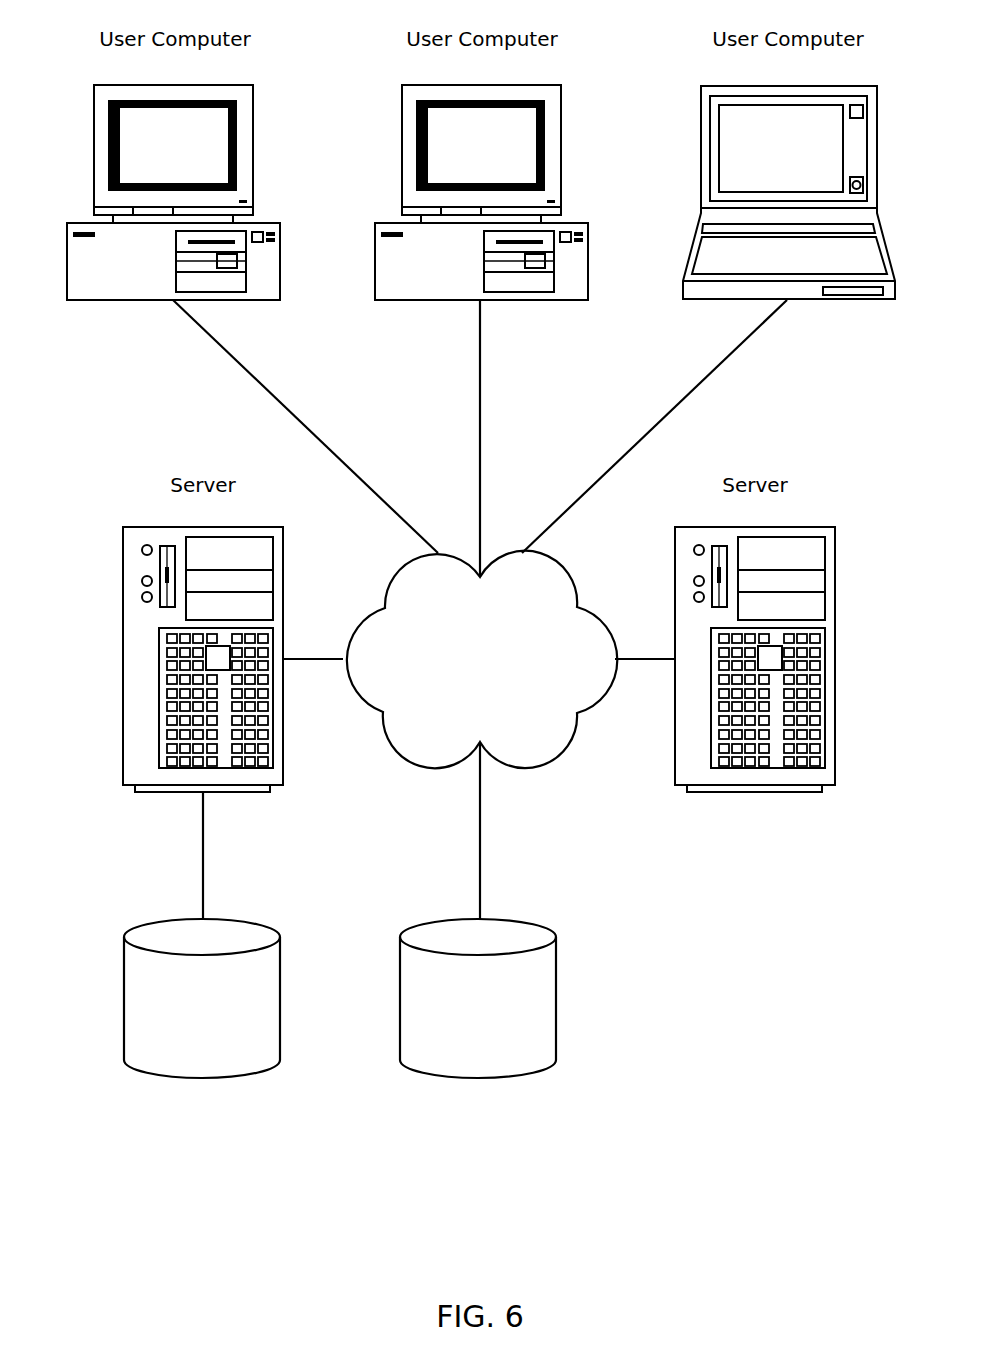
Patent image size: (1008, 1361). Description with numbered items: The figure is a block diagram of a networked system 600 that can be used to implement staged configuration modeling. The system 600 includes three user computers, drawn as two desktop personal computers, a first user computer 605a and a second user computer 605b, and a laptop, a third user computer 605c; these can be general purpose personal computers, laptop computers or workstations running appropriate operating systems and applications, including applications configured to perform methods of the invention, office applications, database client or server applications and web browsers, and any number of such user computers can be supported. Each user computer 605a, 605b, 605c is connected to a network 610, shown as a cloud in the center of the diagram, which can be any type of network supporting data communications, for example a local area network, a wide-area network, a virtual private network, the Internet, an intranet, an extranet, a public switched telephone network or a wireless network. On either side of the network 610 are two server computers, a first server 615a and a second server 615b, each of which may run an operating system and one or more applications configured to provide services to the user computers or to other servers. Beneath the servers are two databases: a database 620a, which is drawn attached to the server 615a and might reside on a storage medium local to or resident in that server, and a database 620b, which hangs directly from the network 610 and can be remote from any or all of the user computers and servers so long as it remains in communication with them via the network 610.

The system 600 is at (742, 1142).
The user computer 605a is at (280, 242).
The user computer 605b is at (375, 246).
The user computer 605c is at (701, 193).
The network 610 is at (515, 766).
The server 615a is at (123, 659).
The server 615b is at (835, 661).
The database 620a is at (200, 1078).
The database 620b is at (476, 1078).